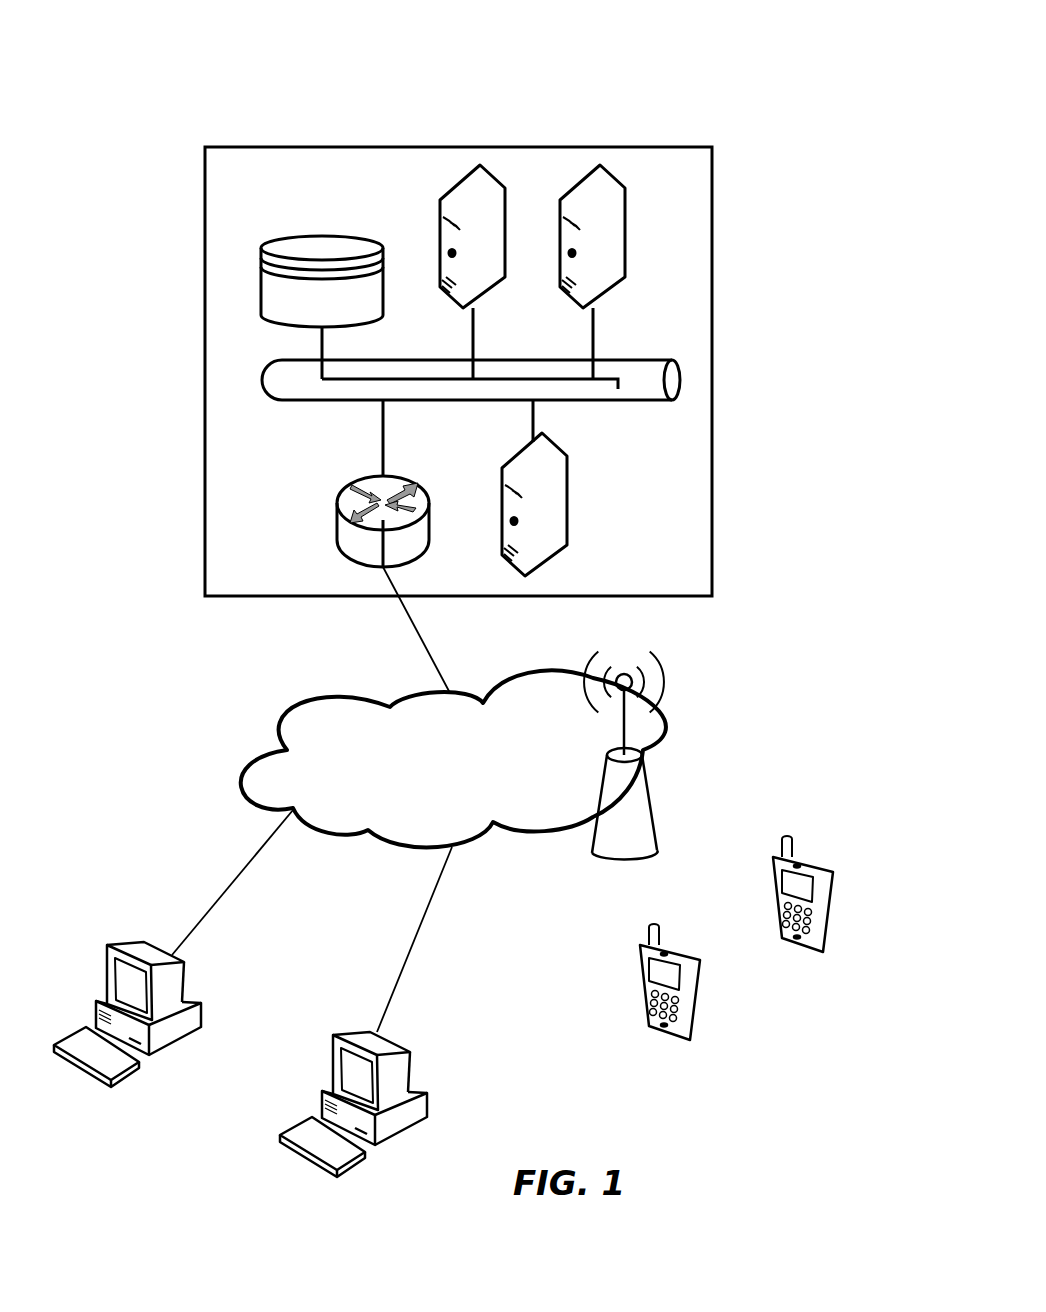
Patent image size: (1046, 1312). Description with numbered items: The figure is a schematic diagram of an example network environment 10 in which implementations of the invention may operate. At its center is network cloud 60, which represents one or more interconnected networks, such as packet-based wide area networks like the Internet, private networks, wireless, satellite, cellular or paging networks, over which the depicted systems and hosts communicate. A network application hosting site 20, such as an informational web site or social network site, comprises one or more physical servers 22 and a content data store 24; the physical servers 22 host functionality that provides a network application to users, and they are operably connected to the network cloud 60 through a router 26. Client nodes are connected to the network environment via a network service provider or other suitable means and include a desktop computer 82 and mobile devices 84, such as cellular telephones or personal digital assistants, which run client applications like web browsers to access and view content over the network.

The system 10 is at (701, 112).
The network application hosting site 20 is at (203, 388).
The physical server 22 is at (440, 238).
The content data store 24 is at (325, 237).
The router 26 is at (338, 520).
The network cloud 60 is at (238, 770).
The desktop computer 82 is at (118, 942).
The mobile device 84 is at (835, 902).